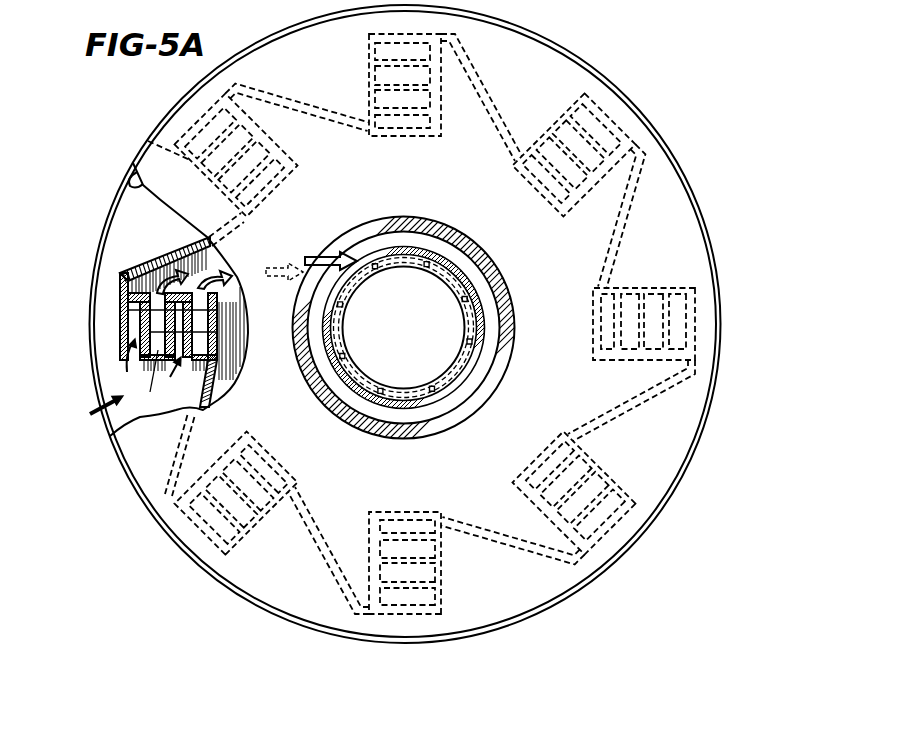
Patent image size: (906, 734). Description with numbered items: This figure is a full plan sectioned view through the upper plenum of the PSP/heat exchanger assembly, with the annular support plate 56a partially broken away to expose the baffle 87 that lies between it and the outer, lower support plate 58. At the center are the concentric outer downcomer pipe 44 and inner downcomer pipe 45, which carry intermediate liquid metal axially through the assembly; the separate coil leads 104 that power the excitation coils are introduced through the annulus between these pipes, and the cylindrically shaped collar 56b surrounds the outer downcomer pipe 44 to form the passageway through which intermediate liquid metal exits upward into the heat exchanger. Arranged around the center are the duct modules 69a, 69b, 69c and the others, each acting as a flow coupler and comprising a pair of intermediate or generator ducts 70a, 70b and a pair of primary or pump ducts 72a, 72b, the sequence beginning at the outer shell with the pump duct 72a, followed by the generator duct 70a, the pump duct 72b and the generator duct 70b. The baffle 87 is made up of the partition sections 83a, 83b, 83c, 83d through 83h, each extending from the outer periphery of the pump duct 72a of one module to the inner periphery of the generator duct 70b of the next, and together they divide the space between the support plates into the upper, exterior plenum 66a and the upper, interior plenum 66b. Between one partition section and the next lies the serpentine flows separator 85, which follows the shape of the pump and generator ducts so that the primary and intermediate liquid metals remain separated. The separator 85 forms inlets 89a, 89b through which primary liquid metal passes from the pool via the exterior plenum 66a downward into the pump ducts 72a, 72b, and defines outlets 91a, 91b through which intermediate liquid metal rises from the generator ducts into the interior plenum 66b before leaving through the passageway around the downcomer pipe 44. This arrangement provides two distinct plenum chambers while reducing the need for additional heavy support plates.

The outer downcomer pipe 44 is at (470, 280).
The inner downcomer pipe 45 is at (458, 292).
The coil leads 104 is at (467, 342).
The annular support plate 56a is at (134, 174).
The cylindrically shaped collar 56b is at (510, 372).
The outer, lower support plate 58 is at (100, 348).
The upper, exterior plenum 66a is at (158, 225).
The upper, interior plenum 66b is at (412, 192).
The duct module 69a is at (407, 616).
The duct module 69b is at (201, 523).
The duct module 69c is at (118, 323).
The intermediate or generator duct 70a is at (135, 377).
The intermediate or generator duct 70b is at (204, 312).
The primary or pump duct 72a is at (120, 291).
The primary or pump duct 72b is at (194, 271).
The partition section 83a is at (312, 520).
The partition section 83b is at (192, 425).
The partition section 83c is at (170, 241).
The partition section 83d is at (293, 92).
The partition section 83h is at (532, 528).
The flows separator 85 is at (194, 333).
The baffle 87 is at (215, 391).
The inlet 89a is at (148, 141).
The inlet 89b is at (221, 191).
The outlet 91a is at (266, 127).
The outlet 91b is at (296, 166).